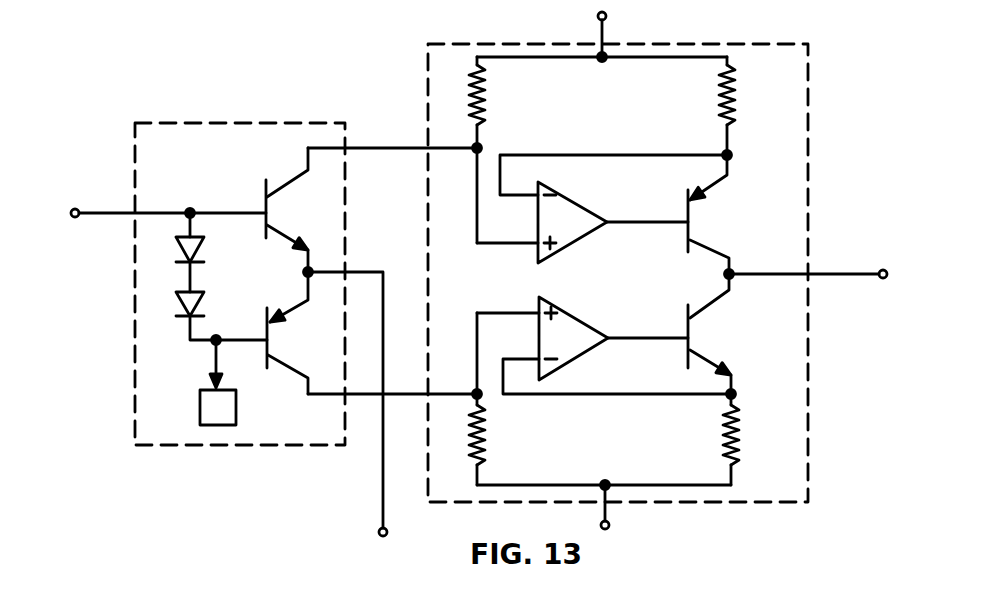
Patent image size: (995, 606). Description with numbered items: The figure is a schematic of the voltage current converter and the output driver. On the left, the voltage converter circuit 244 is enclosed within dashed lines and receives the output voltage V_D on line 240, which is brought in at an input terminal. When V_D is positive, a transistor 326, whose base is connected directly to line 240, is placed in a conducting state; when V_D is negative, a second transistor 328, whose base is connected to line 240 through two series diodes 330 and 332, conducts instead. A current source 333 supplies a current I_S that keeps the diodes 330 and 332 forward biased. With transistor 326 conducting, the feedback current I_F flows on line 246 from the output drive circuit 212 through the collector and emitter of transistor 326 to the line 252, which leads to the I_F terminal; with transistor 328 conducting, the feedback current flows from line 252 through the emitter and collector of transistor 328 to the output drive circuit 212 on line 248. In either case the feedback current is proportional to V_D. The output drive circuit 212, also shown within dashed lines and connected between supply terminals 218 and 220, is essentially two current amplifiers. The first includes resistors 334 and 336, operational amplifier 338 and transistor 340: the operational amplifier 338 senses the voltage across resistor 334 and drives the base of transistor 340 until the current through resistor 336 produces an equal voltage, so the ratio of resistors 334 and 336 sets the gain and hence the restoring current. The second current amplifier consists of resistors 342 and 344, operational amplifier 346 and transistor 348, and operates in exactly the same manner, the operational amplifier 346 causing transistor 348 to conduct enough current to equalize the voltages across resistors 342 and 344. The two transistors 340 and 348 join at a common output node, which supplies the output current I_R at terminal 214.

The output drive circuit 212 is at (807, 108).
The output current terminal I_R 214 is at (825, 275).
The positive supply terminal 218 is at (610, 27).
The negative supply terminal 220 is at (612, 517).
The line 240 is at (113, 215).
The voltage converter circuit 244 is at (182, 447).
The line 246 is at (392, 148).
The line 248 is at (395, 398).
The line 252 is at (380, 447).
The transistor 326 is at (263, 200).
The second transistor 328 is at (270, 340).
The diode 330 is at (227, 242).
The diode 332 is at (228, 300).
The current source 333 is at (236, 407).
The resistor 334 is at (481, 96).
The resistor 336 is at (737, 100).
The operational amplifier 338 is at (568, 195).
The transistor 340 is at (692, 222).
The resistor 342 is at (485, 440).
The resistor 344 is at (740, 417).
The operational amplifier 346 is at (580, 357).
The transistor 348 is at (692, 337).